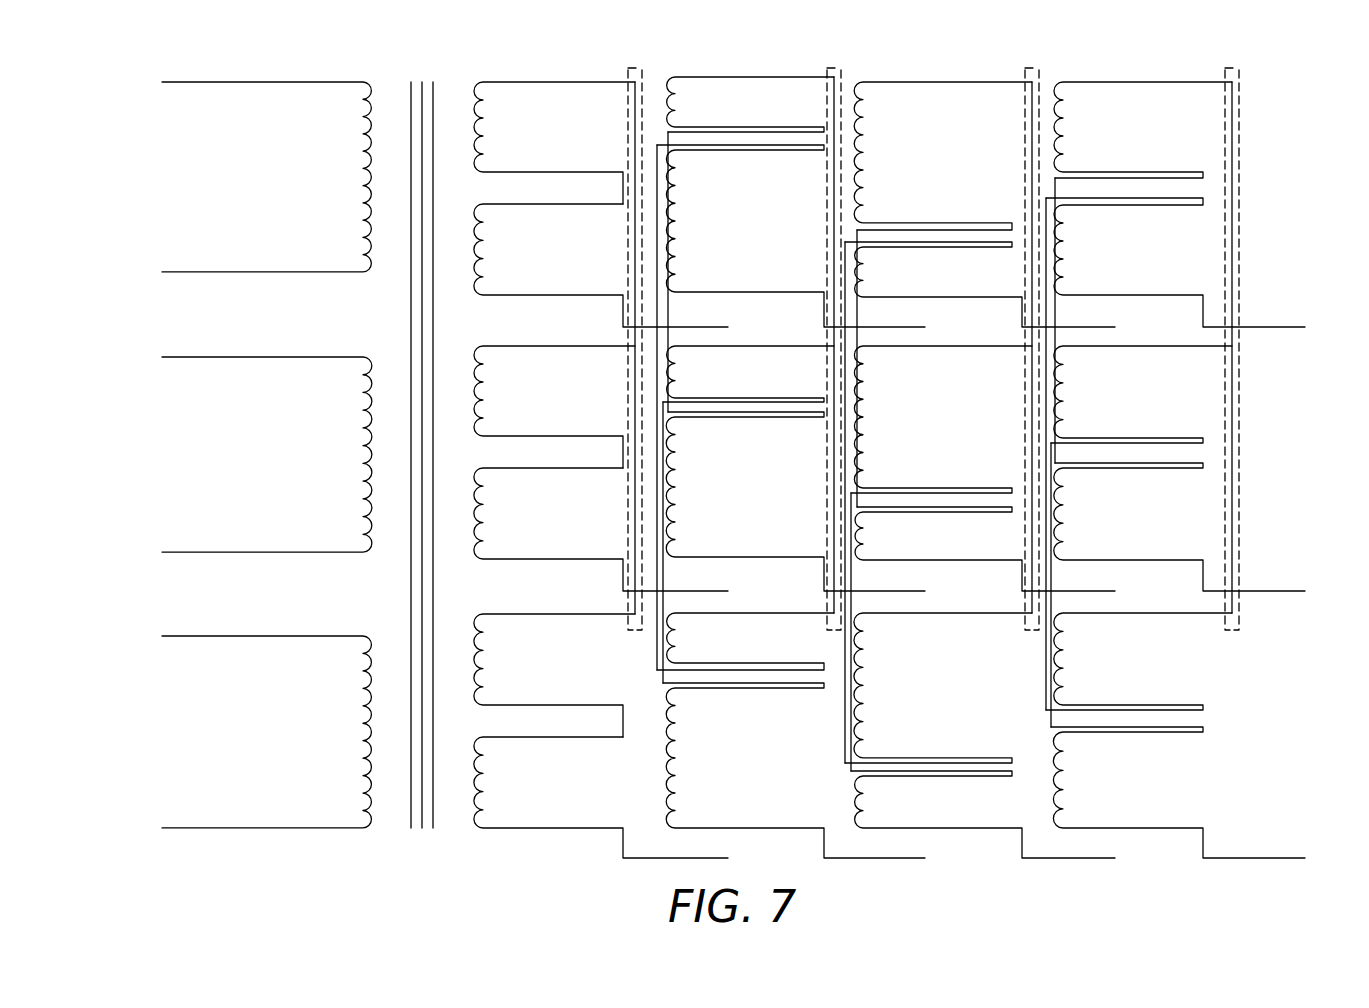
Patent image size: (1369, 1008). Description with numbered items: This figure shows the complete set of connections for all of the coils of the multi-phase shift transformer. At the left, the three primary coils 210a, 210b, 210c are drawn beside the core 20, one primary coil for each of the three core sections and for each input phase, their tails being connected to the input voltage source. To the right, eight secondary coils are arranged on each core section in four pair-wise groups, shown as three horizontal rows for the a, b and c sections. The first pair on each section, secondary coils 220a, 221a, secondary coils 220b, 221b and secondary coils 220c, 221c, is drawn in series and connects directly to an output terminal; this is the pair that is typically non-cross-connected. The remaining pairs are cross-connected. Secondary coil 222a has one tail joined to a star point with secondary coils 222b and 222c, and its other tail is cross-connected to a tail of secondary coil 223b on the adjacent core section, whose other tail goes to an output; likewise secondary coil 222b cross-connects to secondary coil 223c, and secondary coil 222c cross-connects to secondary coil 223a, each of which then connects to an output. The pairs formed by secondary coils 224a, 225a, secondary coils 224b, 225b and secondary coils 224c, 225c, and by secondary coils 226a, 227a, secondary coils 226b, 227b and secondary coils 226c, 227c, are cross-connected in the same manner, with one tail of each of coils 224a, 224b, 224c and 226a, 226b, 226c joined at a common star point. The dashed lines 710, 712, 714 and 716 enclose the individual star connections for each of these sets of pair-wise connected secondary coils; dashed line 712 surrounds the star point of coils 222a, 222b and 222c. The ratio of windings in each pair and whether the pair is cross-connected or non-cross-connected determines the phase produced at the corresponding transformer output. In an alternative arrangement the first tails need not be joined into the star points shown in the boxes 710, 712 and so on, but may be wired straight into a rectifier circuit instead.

The core 20 is at (424, 836).
The primary coil 210a is at (357, 174).
The primary coil 210b is at (357, 450).
The primary coil 210c is at (357, 727).
The secondary coil 220a is at (490, 126).
The secondary coil 221a is at (490, 247).
The secondary coil 220b is at (490, 387).
The secondary coil 221b is at (490, 510).
The secondary coil 220c is at (490, 657).
The secondary coil 221c is at (490, 777).
The secondary coil 222a is at (682, 99).
The secondary coil 223a is at (682, 222).
The secondary coil 222b is at (682, 366).
The secondary coil 223b is at (682, 489).
The secondary coil 222c is at (682, 644).
The secondary coil 223c is at (682, 759).
The secondary coil 224a is at (870, 156).
The secondary coil 225a is at (870, 267).
The secondary coil 224b is at (870, 407).
The secondary coil 225b is at (870, 531).
The secondary coil 224c is at (870, 686).
The secondary coil 225c is at (870, 800).
The secondary coil 226a is at (1070, 126).
The secondary coil 227a is at (1070, 244).
The secondary coil 226b is at (1070, 399).
The secondary coil 227b is at (1070, 510).
The secondary coil 226c is at (1070, 656).
The secondary coil 227c is at (1070, 776).
The dashed line 710 is at (631, 67).
The dashed line 712 is at (830, 67).
The dashed line 714 is at (1028, 67).
The dashed line 716 is at (1228, 67).